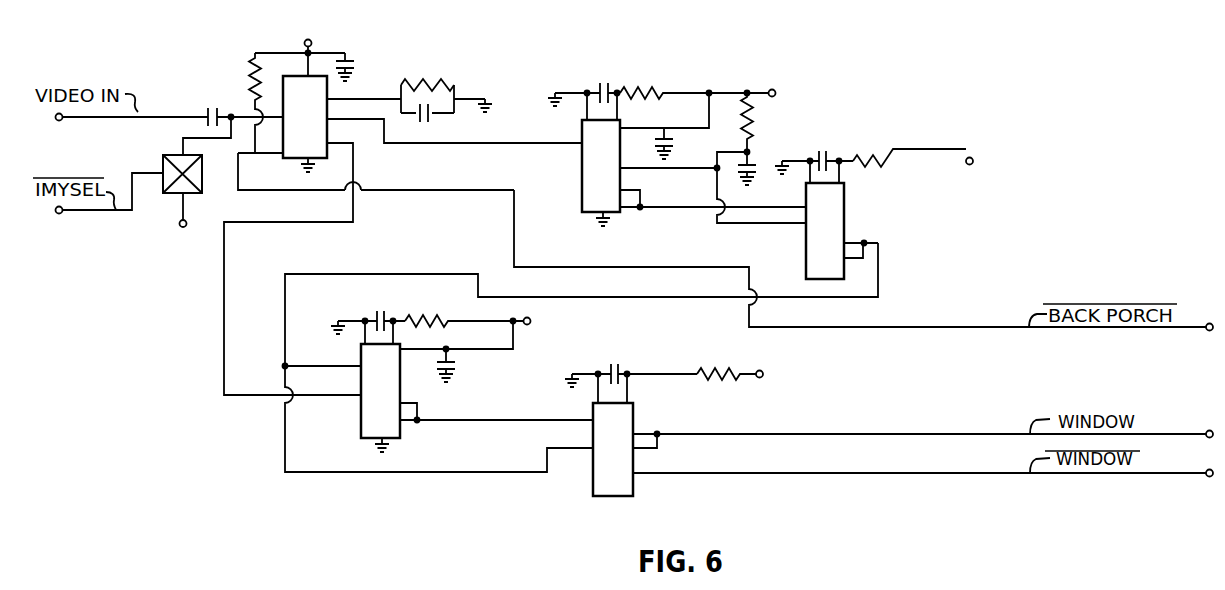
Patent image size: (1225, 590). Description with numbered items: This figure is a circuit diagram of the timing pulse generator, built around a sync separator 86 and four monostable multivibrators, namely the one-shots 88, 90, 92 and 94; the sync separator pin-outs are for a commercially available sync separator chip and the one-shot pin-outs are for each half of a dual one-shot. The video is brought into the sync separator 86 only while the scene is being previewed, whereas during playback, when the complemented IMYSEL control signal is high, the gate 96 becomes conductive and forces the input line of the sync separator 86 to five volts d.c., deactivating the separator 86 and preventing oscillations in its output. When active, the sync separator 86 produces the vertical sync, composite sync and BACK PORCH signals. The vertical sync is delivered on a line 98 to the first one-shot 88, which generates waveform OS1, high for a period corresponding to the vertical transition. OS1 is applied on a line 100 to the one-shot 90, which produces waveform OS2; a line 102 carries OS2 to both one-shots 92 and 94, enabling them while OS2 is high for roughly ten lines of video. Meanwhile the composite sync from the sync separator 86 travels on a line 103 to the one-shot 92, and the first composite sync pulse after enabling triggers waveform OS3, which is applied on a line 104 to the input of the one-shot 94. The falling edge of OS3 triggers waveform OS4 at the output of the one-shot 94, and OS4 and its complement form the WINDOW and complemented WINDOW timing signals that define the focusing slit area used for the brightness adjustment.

The sync separator 86 is at (296, 150).
The first one-shot 88 is at (587, 185).
The one-shot 90 is at (813, 251).
The one-shot 92 is at (370, 405).
The one-shot 94 is at (603, 481).
The gate 96 is at (193, 194).
The line 98 is at (498, 145).
The line 100 is at (650, 207).
The line 102 is at (807, 298).
The line 103 is at (225, 321).
The line 104 is at (490, 420).